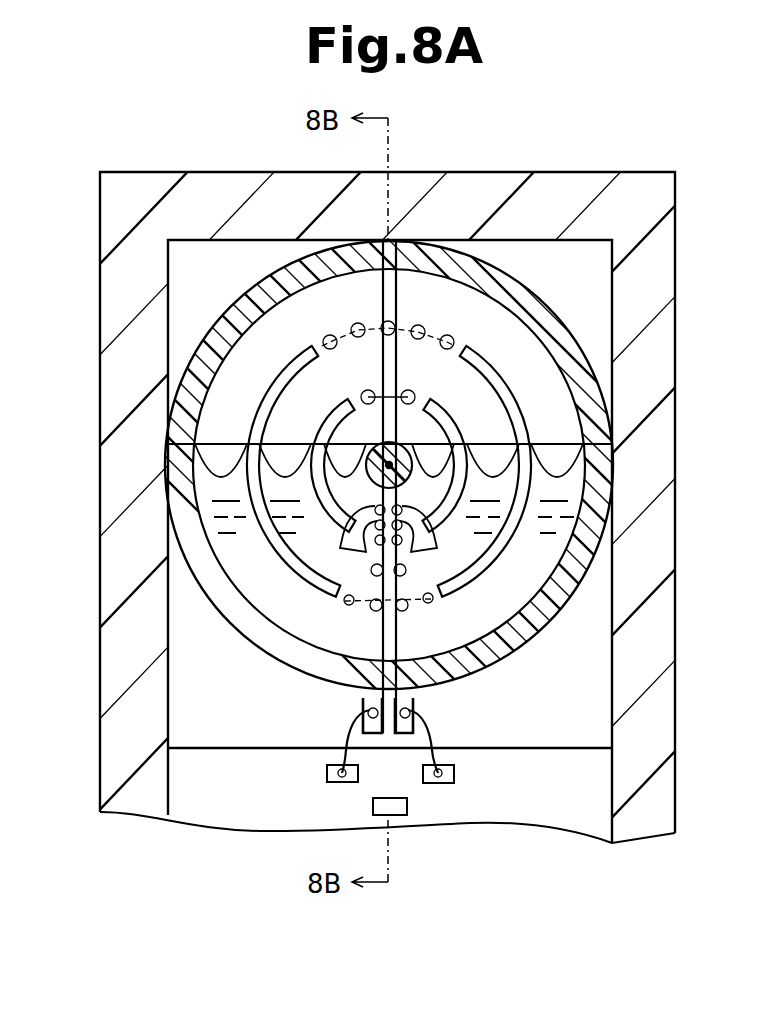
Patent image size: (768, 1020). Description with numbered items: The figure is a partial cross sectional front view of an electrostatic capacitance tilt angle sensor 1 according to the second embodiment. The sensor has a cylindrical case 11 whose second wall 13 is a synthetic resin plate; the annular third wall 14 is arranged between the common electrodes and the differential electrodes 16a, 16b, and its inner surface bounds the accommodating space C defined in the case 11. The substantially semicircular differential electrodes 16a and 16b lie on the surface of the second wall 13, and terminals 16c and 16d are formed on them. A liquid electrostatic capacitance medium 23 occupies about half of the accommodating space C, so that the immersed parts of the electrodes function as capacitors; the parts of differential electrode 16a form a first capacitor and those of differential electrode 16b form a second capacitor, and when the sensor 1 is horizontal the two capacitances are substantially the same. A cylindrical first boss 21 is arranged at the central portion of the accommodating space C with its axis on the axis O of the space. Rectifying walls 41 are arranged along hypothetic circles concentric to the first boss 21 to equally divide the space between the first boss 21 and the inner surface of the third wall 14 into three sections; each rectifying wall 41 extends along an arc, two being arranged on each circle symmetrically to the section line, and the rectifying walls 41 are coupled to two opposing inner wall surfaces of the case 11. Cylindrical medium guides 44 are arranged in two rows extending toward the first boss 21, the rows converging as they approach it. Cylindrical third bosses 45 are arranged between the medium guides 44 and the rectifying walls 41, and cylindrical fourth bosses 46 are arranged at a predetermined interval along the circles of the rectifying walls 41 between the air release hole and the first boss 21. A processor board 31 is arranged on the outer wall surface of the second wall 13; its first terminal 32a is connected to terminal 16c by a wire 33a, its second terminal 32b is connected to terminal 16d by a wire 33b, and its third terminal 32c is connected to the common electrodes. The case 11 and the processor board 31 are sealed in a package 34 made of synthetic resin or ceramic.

The tilt angle sensor 1 is at (633, 139).
The case 11 is at (526, 674).
The second wall 13 is at (197, 738).
The third wall 14 is at (548, 322).
The differential electrode 16a is at (256, 592).
The differential electrode 16b is at (550, 566).
The terminal 16c is at (363, 705).
The terminal 16d is at (415, 705).
The first boss 21 is at (315, 455).
The liquid electrostatic capacitance medium 23 is at (260, 610).
The processor board 31 is at (557, 822).
The first terminal 32a is at (327, 776).
The second terminal 32b is at (455, 780).
The third terminal 32c is at (395, 815).
The wire 33a is at (332, 728).
The wire 33b is at (443, 738).
The package 34 is at (647, 830).
The rectifying wall 41 is at (250, 490).
The medium guide 44 is at (372, 569).
The third boss 45 is at (337, 600).
The fourth boss 46 is at (331, 335).
The accommodating space C is at (245, 350).
The axis O is at (392, 468).